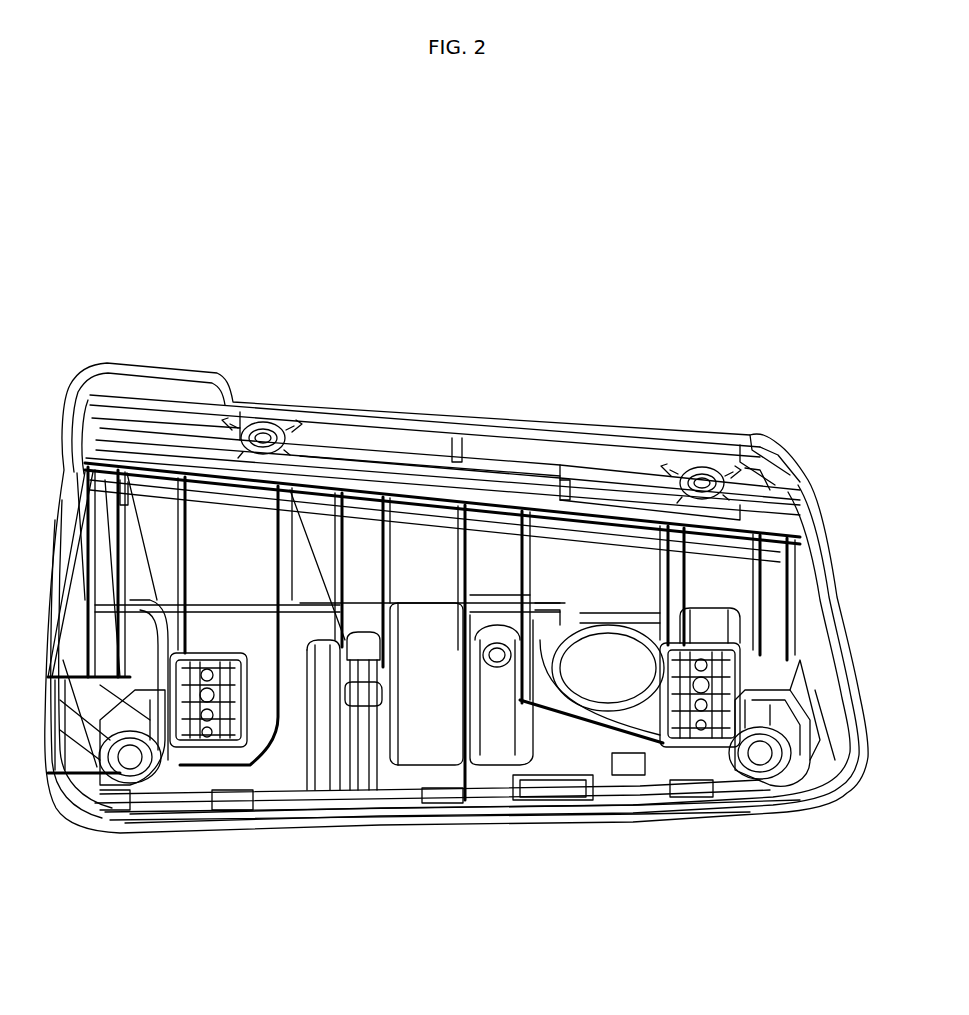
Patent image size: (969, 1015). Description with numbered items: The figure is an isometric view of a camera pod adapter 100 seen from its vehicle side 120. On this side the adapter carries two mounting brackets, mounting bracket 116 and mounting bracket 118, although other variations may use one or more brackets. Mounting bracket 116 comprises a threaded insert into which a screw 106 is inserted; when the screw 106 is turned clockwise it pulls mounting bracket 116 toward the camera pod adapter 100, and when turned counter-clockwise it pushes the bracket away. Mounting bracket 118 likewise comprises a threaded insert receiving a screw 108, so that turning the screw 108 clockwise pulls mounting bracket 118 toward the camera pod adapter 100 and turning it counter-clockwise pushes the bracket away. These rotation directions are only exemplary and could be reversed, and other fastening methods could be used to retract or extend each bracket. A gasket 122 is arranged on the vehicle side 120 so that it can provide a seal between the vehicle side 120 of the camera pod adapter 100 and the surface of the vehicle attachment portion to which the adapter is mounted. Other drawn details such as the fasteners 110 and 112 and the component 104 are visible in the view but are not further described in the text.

The camera pod adapter 100 is at (458, 460).
The circular mount 104 is at (608, 677).
The screw 106 is at (700, 680).
The screw 108 is at (205, 690).
The right fastener 110 is at (702, 481).
The left fastener 112 is at (263, 436).
The mounting bracket 116 is at (733, 727).
The mounting bracket 118 is at (185, 735).
The vehicle side 120 is at (384, 780).
The gasket 122 is at (282, 792).